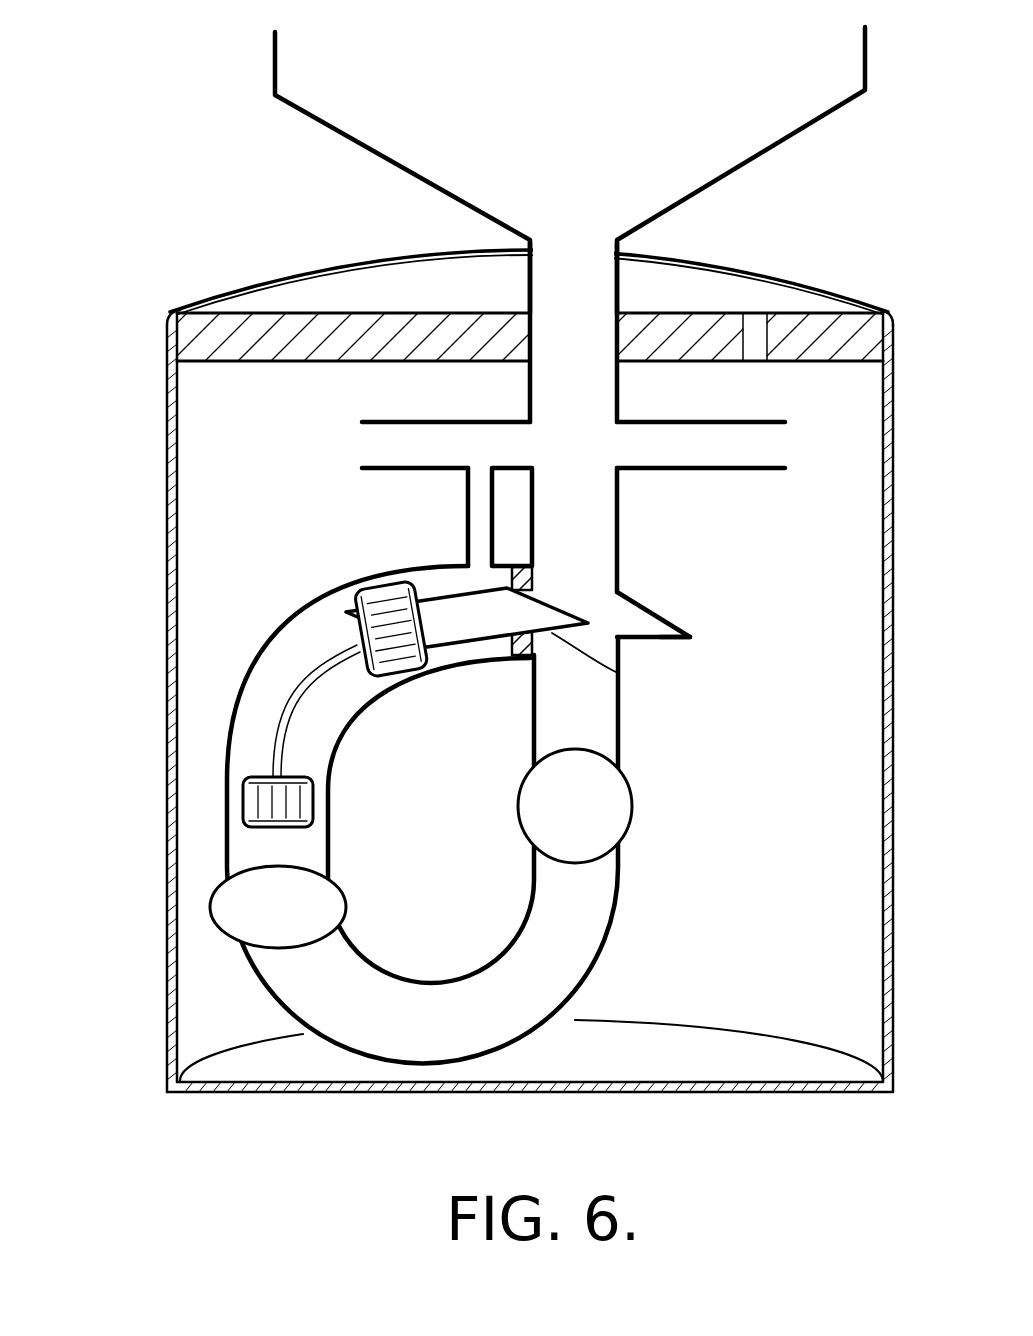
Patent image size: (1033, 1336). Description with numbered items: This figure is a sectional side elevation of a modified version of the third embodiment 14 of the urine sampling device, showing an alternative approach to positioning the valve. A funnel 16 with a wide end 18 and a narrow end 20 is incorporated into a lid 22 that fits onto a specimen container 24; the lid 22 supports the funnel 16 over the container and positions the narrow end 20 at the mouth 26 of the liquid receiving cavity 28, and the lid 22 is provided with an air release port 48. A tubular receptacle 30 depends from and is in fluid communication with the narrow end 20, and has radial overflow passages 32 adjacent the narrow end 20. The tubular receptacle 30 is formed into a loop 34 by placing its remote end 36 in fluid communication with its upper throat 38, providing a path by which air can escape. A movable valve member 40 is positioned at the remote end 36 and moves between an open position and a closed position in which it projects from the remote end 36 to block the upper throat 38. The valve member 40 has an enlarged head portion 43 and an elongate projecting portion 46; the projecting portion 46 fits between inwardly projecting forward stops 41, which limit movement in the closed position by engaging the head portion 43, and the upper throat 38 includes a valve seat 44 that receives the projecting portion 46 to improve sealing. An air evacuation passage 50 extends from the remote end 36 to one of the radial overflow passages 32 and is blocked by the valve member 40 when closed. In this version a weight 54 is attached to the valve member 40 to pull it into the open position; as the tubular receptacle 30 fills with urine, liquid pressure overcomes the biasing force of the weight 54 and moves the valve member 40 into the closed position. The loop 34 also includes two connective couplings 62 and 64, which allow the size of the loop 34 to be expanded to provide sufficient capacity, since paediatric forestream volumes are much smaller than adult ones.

The third embodiment 14 is at (292, 237).
The funnel 16 is at (713, 175).
The wide end 18 is at (863, 38).
The narrow end 20 is at (517, 277).
The lid 22 is at (230, 320).
The specimen container 24 is at (167, 860).
The mouth 26 is at (177, 366).
The liquid receiving cavity 28 is at (742, 939).
The tubular receptacle 30 is at (618, 522).
The radial overflow passages 32 is at (423, 421).
The loop 34 is at (240, 690).
The remote end 36 is at (390, 568).
The upper throat 38 is at (628, 590).
The movable valve member 40 is at (445, 660).
The forward stops 41 is at (537, 580).
The enlarged head portion 43 is at (365, 625).
The valve seat 44 is at (665, 622).
The elongate projecting portion 46 is at (618, 675).
The air release port 48 is at (750, 318).
The air evacuation passage 50 is at (458, 523).
The weight 54 is at (296, 808).
The connective coupling 62 is at (330, 905).
The connective coupling 64 is at (610, 800).